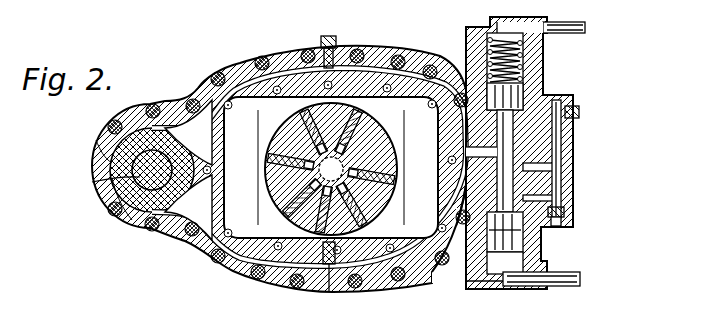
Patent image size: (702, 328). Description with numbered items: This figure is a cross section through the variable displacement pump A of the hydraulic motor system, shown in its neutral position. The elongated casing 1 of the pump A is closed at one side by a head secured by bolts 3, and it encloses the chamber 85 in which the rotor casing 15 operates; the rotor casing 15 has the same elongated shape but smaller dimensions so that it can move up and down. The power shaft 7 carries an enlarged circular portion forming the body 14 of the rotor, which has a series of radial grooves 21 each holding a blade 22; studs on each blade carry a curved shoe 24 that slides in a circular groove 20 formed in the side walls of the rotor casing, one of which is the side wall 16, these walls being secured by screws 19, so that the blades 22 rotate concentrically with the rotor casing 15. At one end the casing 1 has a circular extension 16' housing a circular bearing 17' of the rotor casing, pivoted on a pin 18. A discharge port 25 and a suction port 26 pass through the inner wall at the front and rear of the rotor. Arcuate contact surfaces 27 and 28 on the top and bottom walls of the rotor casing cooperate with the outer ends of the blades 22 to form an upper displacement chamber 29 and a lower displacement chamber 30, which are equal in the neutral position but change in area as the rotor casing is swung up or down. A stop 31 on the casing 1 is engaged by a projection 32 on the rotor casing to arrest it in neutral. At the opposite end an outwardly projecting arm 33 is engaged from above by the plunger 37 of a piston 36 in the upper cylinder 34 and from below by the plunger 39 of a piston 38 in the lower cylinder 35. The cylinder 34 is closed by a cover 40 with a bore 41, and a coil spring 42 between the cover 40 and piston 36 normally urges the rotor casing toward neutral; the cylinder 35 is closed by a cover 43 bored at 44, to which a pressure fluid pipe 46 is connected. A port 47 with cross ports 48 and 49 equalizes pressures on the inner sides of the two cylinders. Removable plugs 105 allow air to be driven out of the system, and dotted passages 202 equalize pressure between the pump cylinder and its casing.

The casing of the pump 1 is at (429, 62).
The bolts 3 is at (150, 106).
The shaft 7 is at (308, 148).
The body of a rotor 14 is at (232, 8).
The rotor casing 15 is at (282, 82).
The side wall of the rotor casing 16 is at (309, 153).
The circular extension 16' is at (78, 146).
The circular bearing 17' is at (129, 221).
The pin 18 is at (134, 177).
The screws 19 is at (182, 233).
The circular groove 20 is at (262, 125).
The radial grooves 21 is at (280, 177).
The blade 22 is at (255, 158).
The curved shoe 24 is at (277, 268).
The discharge port 25 is at (189, 99).
The suction port 26 is at (457, 82).
The contact surface 27 is at (343, 80).
The contact surface 28 is at (334, 265).
The upper chamber 29 is at (375, 68).
The lower chamber 30 is at (327, 265).
The stop 31 is at (331, 290).
The projection 32 is at (368, 240).
The arm 33 is at (528, 168).
The cylinder 34 is at (528, 73).
The cylinder 35 is at (526, 263).
The piston 36 is at (541, 91).
The plunger 37 is at (497, 145).
The piston 38 is at (533, 241).
The plunger 39 is at (530, 198).
The cover 40 is at (233, 327).
The bore 41 is at (266, 327).
The coil spring 42 is at (524, 48).
The cover 43 is at (470, 290).
The bore 44 is at (508, 287).
The pressure fluid pipe 46 is at (566, 288).
The port 47 is at (559, 138).
The cross port 48 is at (574, 114).
The cross port 49 is at (560, 218).
The chamber 85 is at (295, 70).
The removable plugs 105 is at (330, 36).
The passages 202 is at (408, 182).
The pump A is at (88, 208).